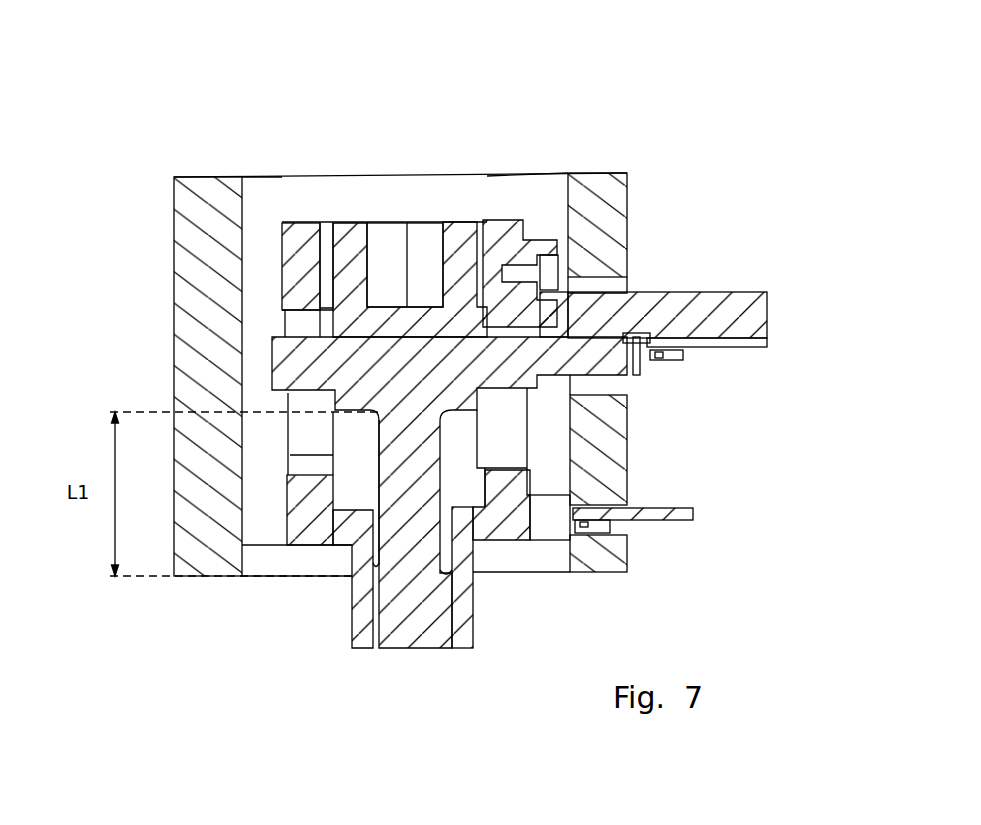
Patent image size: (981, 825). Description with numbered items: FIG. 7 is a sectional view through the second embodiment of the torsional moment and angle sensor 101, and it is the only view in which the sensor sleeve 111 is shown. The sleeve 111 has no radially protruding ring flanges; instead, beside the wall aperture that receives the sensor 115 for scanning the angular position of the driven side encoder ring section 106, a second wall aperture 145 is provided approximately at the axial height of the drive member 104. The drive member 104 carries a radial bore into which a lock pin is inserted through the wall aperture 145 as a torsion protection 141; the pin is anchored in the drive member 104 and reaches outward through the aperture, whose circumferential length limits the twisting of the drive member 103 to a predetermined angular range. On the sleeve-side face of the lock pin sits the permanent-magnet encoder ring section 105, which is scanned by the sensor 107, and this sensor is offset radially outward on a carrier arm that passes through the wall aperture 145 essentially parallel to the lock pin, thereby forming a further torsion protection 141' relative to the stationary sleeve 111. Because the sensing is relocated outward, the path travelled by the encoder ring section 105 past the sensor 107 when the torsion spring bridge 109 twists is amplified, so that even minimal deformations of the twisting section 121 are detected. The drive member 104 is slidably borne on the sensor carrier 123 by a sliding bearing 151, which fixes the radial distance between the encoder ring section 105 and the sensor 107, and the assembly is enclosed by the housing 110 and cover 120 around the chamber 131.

The torsional moment and angle sensor 101 is at (116, 146).
The drive member 103 is at (450, 240).
The drive member 104 is at (400, 607).
The encoder ring section 105 is at (645, 300).
The driven side encoder ring section 106 is at (550, 532).
The sensor 107 is at (672, 358).
The torsion spring bridge 109 is at (370, 420).
The housing 110 is at (592, 163).
The sensor sleeve 111 is at (207, 328).
The sensor 115 is at (600, 527).
The cover 120 is at (515, 211).
The twisting section 121 is at (378, 513).
The sensor carrier 123 is at (290, 473).
The chamber 131 is at (375, 255).
The torsion protection 141 is at (533, 492).
The torsion protection 141' is at (696, 284).
The wall aperture 145 is at (642, 292).
The sliding bearing 151 is at (333, 223).